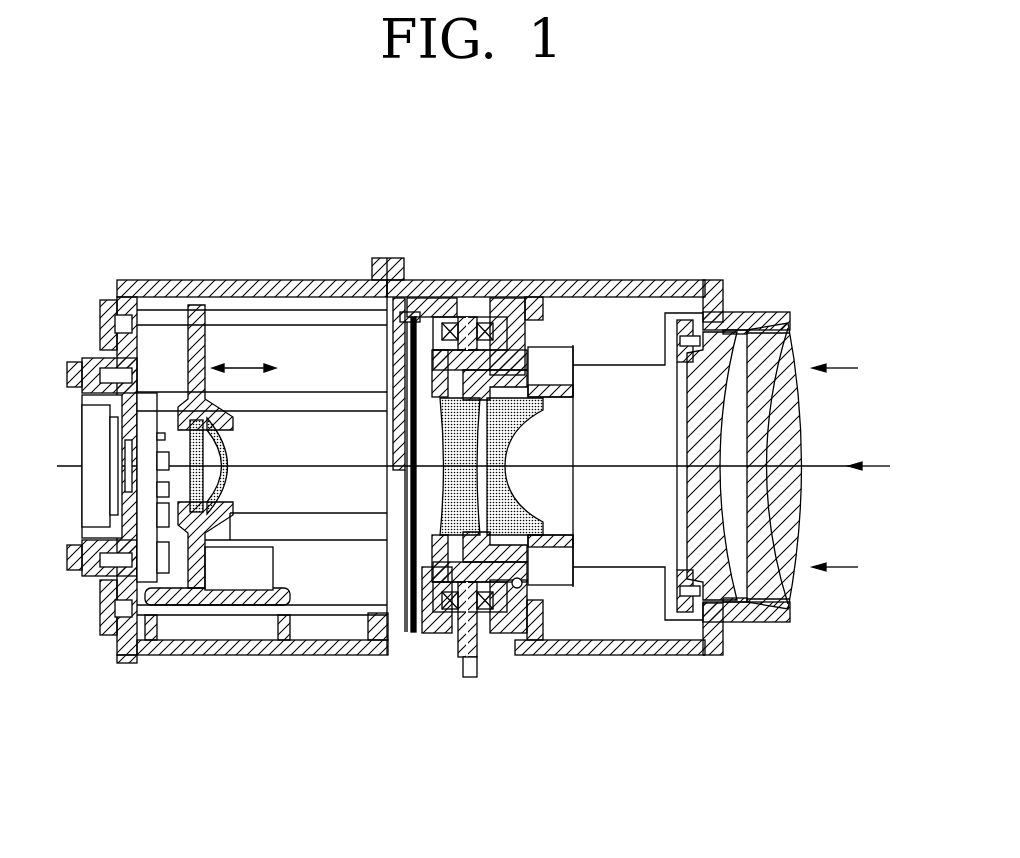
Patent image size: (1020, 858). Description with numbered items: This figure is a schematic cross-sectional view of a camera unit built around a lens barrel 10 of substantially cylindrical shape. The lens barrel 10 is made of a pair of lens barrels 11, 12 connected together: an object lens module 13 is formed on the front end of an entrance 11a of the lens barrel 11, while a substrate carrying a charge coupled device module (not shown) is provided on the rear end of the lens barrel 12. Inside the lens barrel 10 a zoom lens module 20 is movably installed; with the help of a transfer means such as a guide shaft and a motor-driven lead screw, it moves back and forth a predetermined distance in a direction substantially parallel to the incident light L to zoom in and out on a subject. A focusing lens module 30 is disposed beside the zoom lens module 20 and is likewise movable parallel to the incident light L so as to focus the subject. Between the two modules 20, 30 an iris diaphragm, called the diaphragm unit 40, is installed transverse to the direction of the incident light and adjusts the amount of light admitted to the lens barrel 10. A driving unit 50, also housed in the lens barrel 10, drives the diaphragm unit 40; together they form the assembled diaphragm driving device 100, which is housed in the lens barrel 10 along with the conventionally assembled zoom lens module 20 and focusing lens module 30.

The lens barrel 10 is at (584, 266).
The lens barrel 11 is at (487, 289).
The entrance 11a is at (728, 345).
The lens barrel 12 is at (303, 289).
The object lens module 13 is at (824, 416).
The zoom lens module 20 is at (566, 432).
The focusing lens module 30 is at (252, 442).
The iris diaphragm (diaphragm unit) 40 is at (404, 644).
The driving unit 50 is at (447, 663).
The diaphragm driving device 100 is at (496, 670).
The incident light L is at (880, 475).